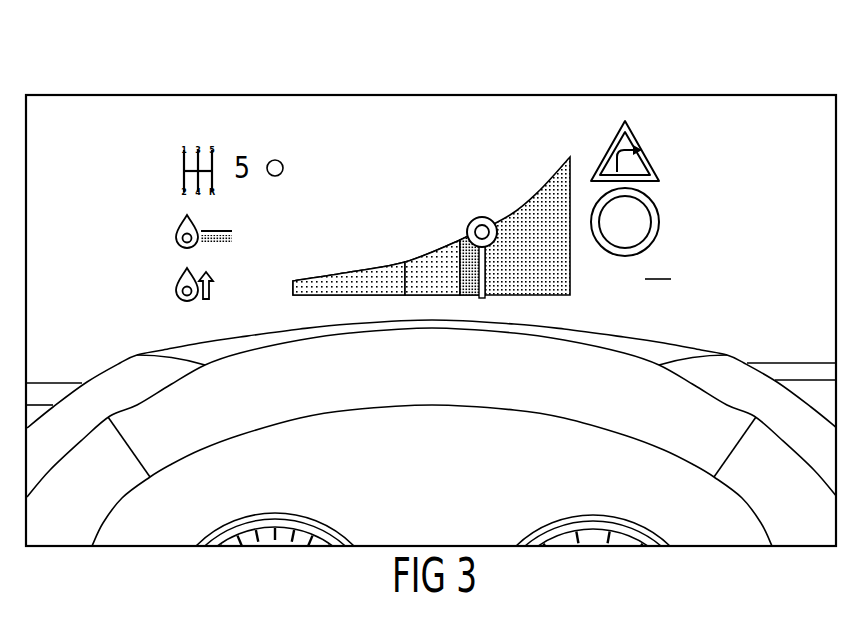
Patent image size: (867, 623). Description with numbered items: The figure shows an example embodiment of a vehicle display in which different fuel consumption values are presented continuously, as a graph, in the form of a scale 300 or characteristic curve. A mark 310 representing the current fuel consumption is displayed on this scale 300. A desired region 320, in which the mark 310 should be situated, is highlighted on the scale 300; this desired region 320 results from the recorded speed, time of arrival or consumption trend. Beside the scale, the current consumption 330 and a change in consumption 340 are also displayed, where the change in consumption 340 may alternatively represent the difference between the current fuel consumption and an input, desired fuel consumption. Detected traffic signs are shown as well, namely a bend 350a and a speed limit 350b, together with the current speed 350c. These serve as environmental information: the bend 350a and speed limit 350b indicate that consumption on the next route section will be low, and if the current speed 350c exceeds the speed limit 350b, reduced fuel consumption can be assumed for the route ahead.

The scale 300 is at (431, 158).
The mark 310 is at (482, 217).
The desired region 320 is at (433, 242).
The current consumption 330 is at (174, 235).
The change in consumption 340 is at (174, 290).
The bend 350a is at (661, 168).
The speed limit 350b is at (660, 223).
The current speed 350c is at (673, 281).